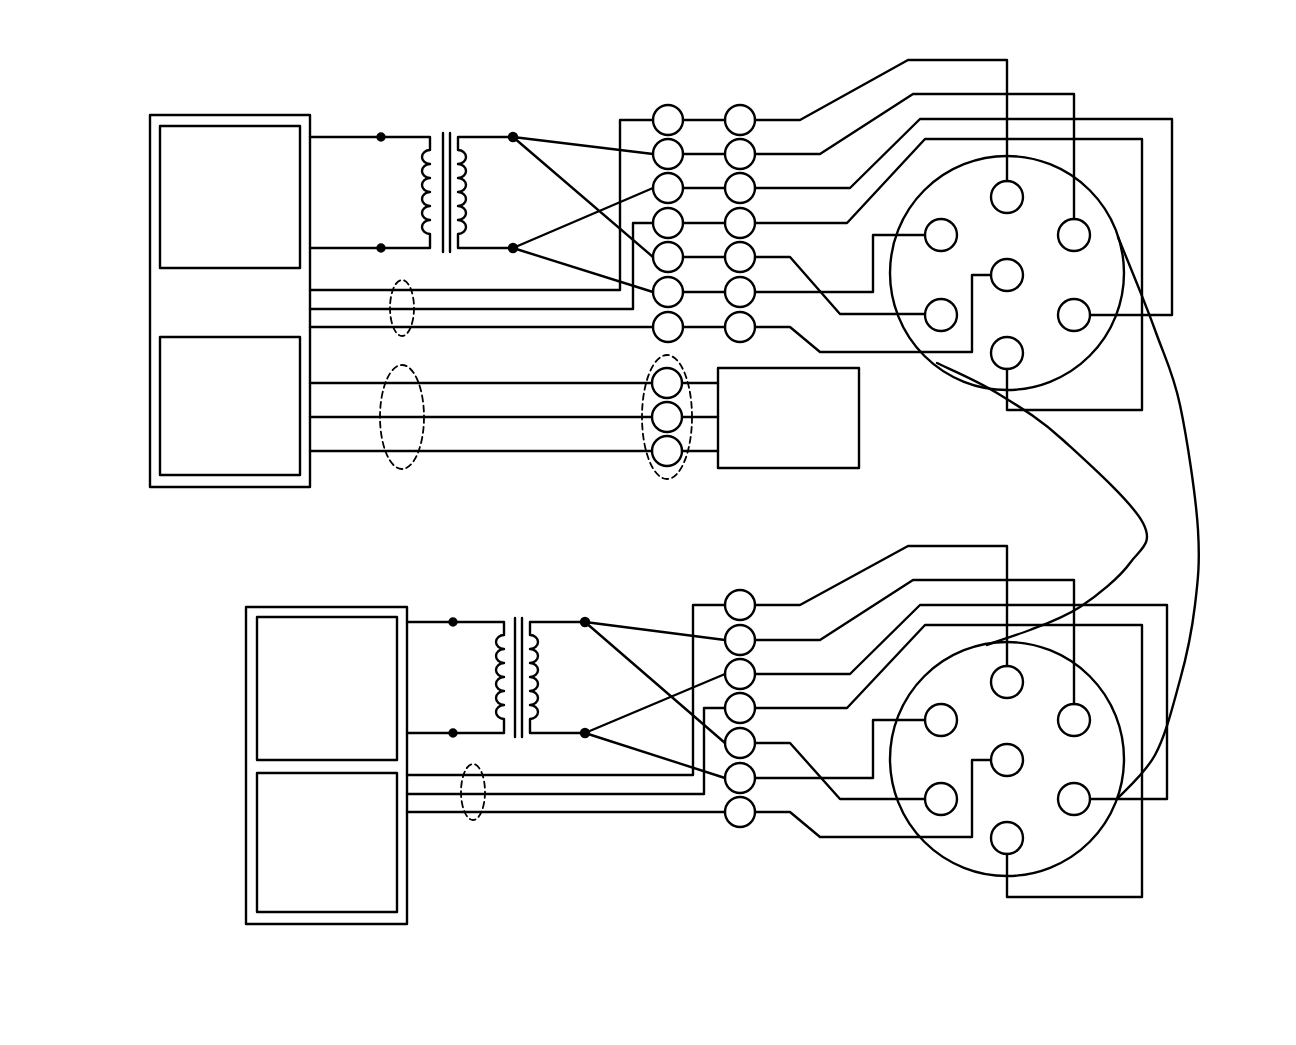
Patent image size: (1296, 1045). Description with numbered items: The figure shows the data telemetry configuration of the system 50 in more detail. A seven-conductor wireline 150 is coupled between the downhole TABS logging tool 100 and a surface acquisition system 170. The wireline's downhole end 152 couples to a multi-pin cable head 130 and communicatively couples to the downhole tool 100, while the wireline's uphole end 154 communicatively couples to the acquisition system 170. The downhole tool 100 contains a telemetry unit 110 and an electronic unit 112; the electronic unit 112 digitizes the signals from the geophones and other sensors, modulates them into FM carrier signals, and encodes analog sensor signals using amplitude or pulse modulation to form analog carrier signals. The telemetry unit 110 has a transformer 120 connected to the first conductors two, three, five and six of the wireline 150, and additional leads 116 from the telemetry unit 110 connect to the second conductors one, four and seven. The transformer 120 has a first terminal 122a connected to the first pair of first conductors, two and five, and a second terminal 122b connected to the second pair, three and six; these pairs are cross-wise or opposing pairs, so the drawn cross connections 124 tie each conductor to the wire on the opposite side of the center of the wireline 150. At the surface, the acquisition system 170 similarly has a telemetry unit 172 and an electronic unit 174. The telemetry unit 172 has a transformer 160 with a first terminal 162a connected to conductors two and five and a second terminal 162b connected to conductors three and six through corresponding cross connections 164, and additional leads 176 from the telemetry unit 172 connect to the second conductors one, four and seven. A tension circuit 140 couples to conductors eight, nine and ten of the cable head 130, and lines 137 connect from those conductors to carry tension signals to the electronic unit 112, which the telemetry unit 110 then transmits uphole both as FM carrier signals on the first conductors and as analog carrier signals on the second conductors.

The system 50 is at (1251, 86).
The downhole TABS logging tool 100 is at (158, 114).
The telemetry unit 110 is at (160, 195).
The electronic unit 112 is at (160, 410).
The additional leads 116 is at (403, 336).
The transformer 120 is at (443, 108).
The first terminal 122a is at (513, 137).
The second terminal 122b is at (513, 248).
The crossed conductor connections 124 is at (572, 214).
The cable head 130 is at (660, 92).
The lines 137 is at (404, 470).
The tension circuit 140 is at (842, 468).
The seven-conductor wireline 150 is at (1197, 442).
The wireline downhole end 152 is at (740, 92).
The wireline uphole end 154 is at (743, 842).
The transformer 160 is at (505, 600).
The first terminal 162a is at (585, 621).
The second terminal 162b is at (585, 734).
The crossed conductor connections 164 is at (641, 707).
The surface acquisition system 170 is at (256, 607).
The telemetry unit 172 is at (257, 688).
The electronic unit 174 is at (257, 848).
The additional leads 176 is at (475, 820).